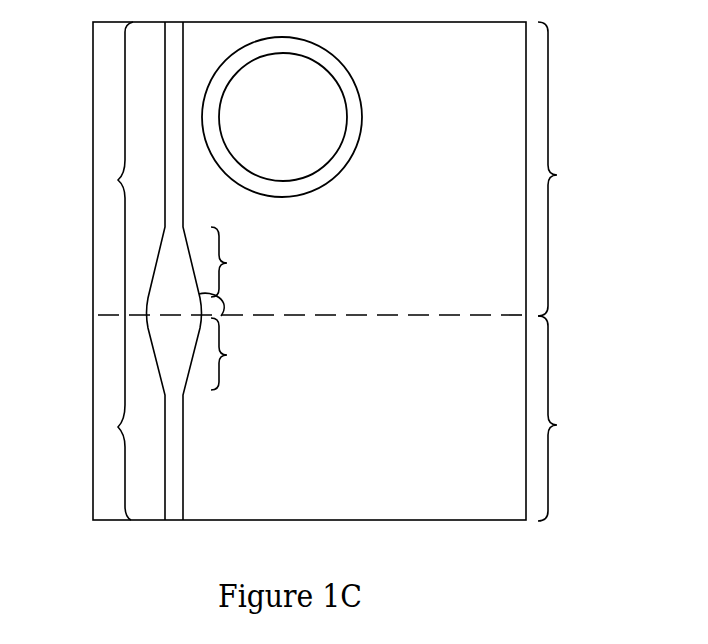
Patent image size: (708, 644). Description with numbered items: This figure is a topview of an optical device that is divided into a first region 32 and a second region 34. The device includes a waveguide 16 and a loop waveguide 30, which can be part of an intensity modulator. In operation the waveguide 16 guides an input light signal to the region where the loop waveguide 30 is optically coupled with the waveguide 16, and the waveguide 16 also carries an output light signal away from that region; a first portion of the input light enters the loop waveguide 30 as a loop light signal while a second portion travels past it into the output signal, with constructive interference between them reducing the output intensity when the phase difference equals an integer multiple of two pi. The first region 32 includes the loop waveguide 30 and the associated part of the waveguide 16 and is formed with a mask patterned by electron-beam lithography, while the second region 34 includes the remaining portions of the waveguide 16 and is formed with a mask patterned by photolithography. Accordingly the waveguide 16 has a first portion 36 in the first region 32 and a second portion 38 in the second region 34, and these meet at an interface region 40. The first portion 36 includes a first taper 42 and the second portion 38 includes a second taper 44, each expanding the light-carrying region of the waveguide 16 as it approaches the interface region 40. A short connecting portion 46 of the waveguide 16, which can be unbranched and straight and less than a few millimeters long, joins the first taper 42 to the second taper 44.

The waveguide 16 is at (210, 183).
The loop waveguide 30 is at (357, 102).
The first region 32 is at (565, 169).
The second region 34 is at (568, 418).
The first portion 36 is at (118, 180).
The second portion 38 is at (118, 427).
The interface region 40 is at (162, 313).
The first taper 42 is at (238, 262).
The second taper 44 is at (238, 354).
The connecting portion 46 is at (230, 305).